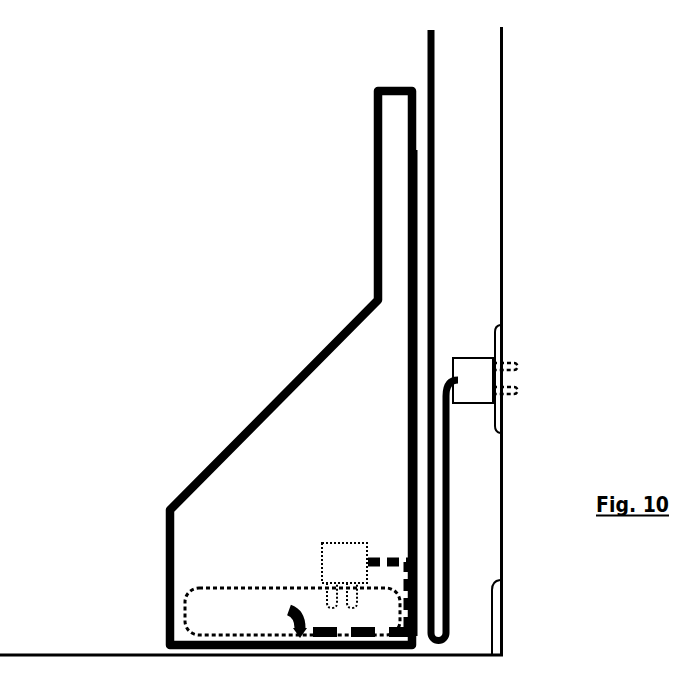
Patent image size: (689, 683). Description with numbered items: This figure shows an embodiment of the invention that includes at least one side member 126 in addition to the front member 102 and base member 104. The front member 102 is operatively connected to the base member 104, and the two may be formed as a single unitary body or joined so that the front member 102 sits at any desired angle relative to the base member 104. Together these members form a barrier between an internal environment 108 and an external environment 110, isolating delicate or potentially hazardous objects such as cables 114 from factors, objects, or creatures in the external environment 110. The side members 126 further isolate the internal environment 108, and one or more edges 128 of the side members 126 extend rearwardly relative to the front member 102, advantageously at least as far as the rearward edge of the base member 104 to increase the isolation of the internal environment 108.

The front member 102 is at (202, 472).
The base member 104 is at (236, 632).
The internal environment 108 is at (483, 458).
The external environment 110 is at (105, 324).
The cables 114 is at (437, 173).
The side members 126 is at (342, 484).
The edges 128 is at (417, 300).